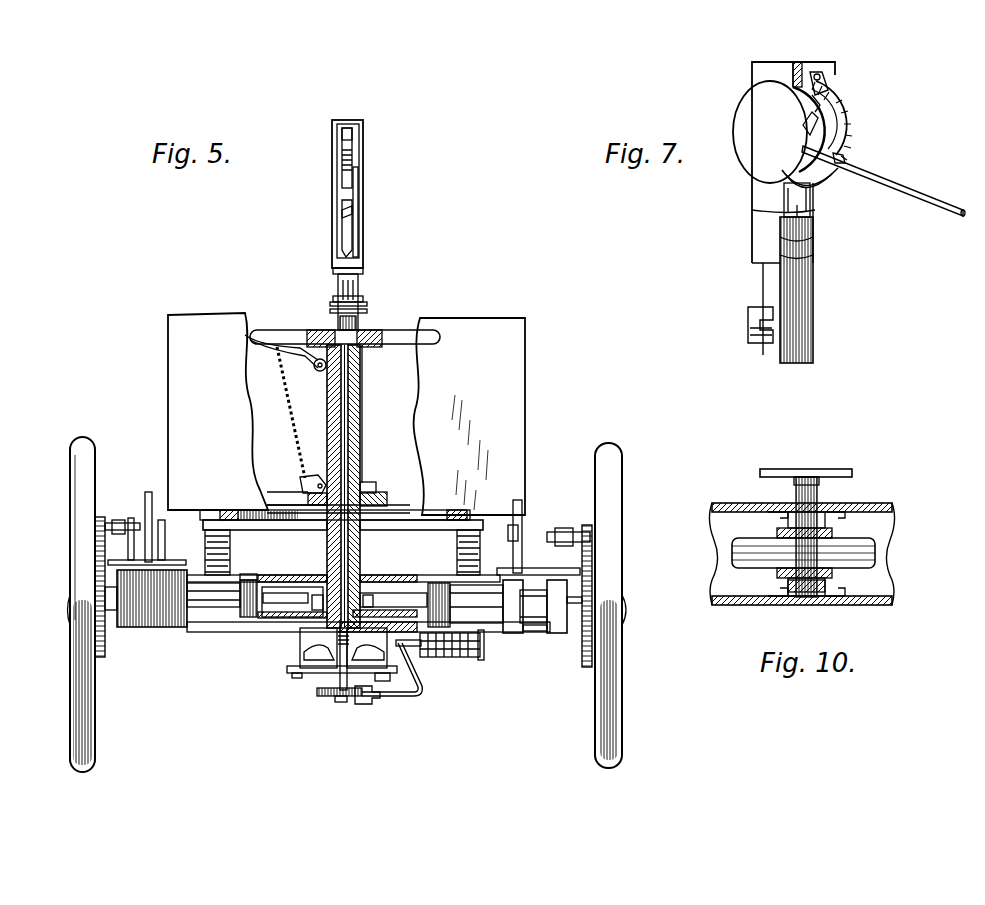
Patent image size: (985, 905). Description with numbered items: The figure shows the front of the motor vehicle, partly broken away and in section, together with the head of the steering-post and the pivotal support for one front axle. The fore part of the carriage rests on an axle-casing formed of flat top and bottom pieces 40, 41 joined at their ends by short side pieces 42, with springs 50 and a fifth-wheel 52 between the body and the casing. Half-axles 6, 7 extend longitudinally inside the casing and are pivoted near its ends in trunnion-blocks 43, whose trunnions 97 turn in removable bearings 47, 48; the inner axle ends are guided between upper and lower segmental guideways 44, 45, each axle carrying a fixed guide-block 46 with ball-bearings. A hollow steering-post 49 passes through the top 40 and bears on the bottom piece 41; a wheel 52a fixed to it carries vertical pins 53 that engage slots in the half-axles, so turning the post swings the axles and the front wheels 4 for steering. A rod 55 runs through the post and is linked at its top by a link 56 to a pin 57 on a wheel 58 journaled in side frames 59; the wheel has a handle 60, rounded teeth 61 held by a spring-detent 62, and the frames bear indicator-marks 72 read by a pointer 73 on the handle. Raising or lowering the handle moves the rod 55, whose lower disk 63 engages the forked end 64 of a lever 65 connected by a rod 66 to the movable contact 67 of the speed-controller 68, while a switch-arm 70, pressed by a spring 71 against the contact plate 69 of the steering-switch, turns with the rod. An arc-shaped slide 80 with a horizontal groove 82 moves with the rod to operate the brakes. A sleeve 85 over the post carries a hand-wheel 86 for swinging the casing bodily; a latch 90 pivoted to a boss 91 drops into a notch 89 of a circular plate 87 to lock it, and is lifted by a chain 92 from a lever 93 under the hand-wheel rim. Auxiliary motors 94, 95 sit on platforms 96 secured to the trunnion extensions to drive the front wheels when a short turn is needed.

In FIG. 5, the front wheel 4 is at (68, 670).
In FIG. 5, the half-axle 6 is at (215, 607).
In FIG. 5, the half-axle 7 is at (490, 623).
In FIG. 5, the top piece of axle-casing 40 is at (418, 576).
In FIG. 10, the top piece of axle-casing 40 is at (862, 504).
In FIG. 5, the bottom piece of axle-casing 41 is at (222, 632).
In FIG. 10, the bottom piece of axle-casing 41 is at (865, 606).
In FIG. 5, the side piece of axle-casing 42 is at (150, 627).
In FIG. 5, the trunnion-block 43 is at (520, 606).
In FIG. 10, the trunnion-block 43 is at (833, 532).
In FIG. 5, the upper segmental guideway 44 is at (270, 587).
In FIG. 5, the lower segmental guideway 45 is at (243, 617).
In FIG. 5, the guide-block 46 is at (247, 576).
In FIG. 5, the removable bearing 47 is at (590, 538).
In FIG. 10, the removable bearing 47 is at (782, 503).
In FIG. 5, the removable bearing 48 is at (550, 632).
In FIG. 10, the removable bearing 48 is at (780, 605).
In FIG. 5, the steering-post 49 is at (360, 408).
In FIG. 7, the steering-post 49 is at (814, 290).
In FIG. 5, the spring 50 is at (232, 543).
In FIG. 5, the fifth-wheel 52 is at (380, 530).
In FIG. 5, the wheel 52a is at (380, 575).
In FIG. 5, the vertical pin 53 is at (300, 578).
In FIG. 5, the rod 55 is at (348, 450).
In FIG. 5, the link 56 is at (356, 230).
In FIG. 7, the link 56 is at (783, 192).
In FIG. 5, the pin 57 is at (353, 222).
In FIG. 7, the pin 57 is at (832, 184).
In FIG. 5, the wheel 58 is at (342, 185).
In FIG. 7, the wheel 58 is at (848, 125).
In FIG. 5, the side frame 59 is at (362, 170).
In FIG. 7, the side frame 59 is at (779, 132).
In FIG. 5, the handle 60 is at (358, 197).
In FIG. 7, the handle 60 is at (905, 178).
In FIG. 5, the rounded tooth 61 is at (352, 158).
In FIG. 5, the spring-detent 62 is at (362, 132).
In FIG. 7, the spring-detent 62 is at (813, 70).
In FIG. 5, the disk 63 is at (322, 697).
In FIG. 5, the forked end 64 is at (366, 704).
In FIG. 5, the lever 65 is at (408, 695).
In FIG. 5, the rod 66 is at (414, 645).
In FIG. 5, the movable contact 67 is at (452, 652).
In FIG. 5, the speed-controller 68 is at (481, 657).
In FIG. 5, the plate 69 is at (300, 673).
In FIG. 5, the switch-arm 70 is at (368, 660).
In FIG. 5, the spring 71 is at (338, 640).
In FIG. 7, the indicator-mark 72 is at (805, 142).
In FIG. 7, the pointer 73 is at (848, 158).
In FIG. 5, the arc-shaped slide 80 is at (362, 303).
In FIG. 7, the arc-shaped slide 80 is at (750, 315).
In FIG. 5, the horizontal groove 82 is at (333, 308).
In FIG. 5, the sleeve 85 is at (327, 407).
In FIG. 5, the hand-wheel 86 is at (410, 330).
In FIG. 5, the circular plate 87 is at (388, 498).
In FIG. 5, the notch 89 is at (300, 497).
In FIG. 5, the latch 90 is at (308, 477).
In FIG. 5, the boss 91 is at (370, 483).
In FIG. 5, the chain 92 is at (286, 397).
In FIG. 5, the lever 93 is at (262, 345).
In FIG. 5, the auxiliary motor 94 is at (152, 522).
In FIG. 5, the auxiliary motor 95 is at (522, 533).
In FIG. 5, the platform 96 is at (176, 560).
In FIG. 10, the platform 96 is at (775, 469).
In FIG. 5, the trunnion 97 is at (530, 570).
In FIG. 10, the trunnion 97 is at (822, 478).